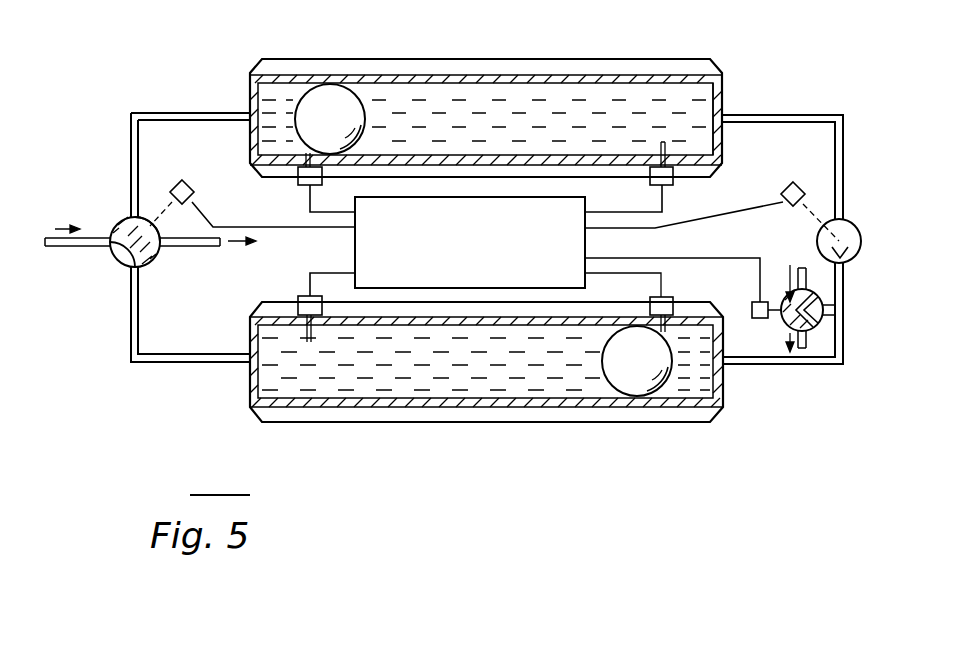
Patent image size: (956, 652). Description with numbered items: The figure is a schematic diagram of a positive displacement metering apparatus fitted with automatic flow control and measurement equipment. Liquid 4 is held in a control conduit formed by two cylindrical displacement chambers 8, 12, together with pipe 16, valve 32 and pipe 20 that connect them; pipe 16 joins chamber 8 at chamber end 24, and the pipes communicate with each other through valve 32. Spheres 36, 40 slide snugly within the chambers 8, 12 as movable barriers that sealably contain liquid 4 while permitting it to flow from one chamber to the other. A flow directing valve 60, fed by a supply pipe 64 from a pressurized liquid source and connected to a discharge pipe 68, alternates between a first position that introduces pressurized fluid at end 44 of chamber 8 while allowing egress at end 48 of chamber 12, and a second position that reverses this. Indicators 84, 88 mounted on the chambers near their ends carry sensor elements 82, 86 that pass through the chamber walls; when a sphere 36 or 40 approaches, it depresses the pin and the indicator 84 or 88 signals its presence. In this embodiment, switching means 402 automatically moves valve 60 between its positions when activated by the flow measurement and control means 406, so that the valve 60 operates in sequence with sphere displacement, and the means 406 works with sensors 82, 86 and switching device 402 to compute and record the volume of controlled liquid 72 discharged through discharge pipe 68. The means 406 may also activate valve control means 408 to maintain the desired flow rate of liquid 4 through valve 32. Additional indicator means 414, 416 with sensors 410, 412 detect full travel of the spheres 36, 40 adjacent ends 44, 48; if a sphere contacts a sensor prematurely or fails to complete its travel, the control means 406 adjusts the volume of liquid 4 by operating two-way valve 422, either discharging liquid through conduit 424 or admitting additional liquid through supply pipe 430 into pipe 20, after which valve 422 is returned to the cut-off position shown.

The liquid 4 is at (402, 102).
The cylindrical displacement chamber 8 is at (498, 65).
The cylindrical displacement chamber 12 is at (366, 412).
The pipe 16 is at (822, 113).
The pipe 20 is at (845, 352).
The chamber end 24 is at (716, 95).
The valve 32 is at (861, 241).
The sphere 36 is at (325, 100).
The sphere 40 is at (637, 382).
The chamber end 44 is at (250, 82).
The chamber end 48 is at (252, 382).
The valve 60 is at (115, 263).
The supply pipe 64 is at (92, 236).
The discharge pipe 68 is at (200, 250).
The controlled liquid 72 is at (283, 98).
The sensor element 82 is at (667, 150).
The indicator 84 is at (673, 183).
The sensor element 86 is at (672, 332).
The indicator 88 is at (673, 298).
The switching means 402 is at (185, 180).
The flow measurement and control means 406 is at (355, 243).
The valve control means 408 is at (782, 184).
The sensor 410 is at (300, 151).
The sensor 412 is at (305, 338).
The indicator means 414 is at (298, 180).
The indicator means 416 is at (298, 297).
The two-way valve 422 is at (787, 330).
The conduit 424 is at (810, 345).
The supply pipe 430 is at (806, 272).